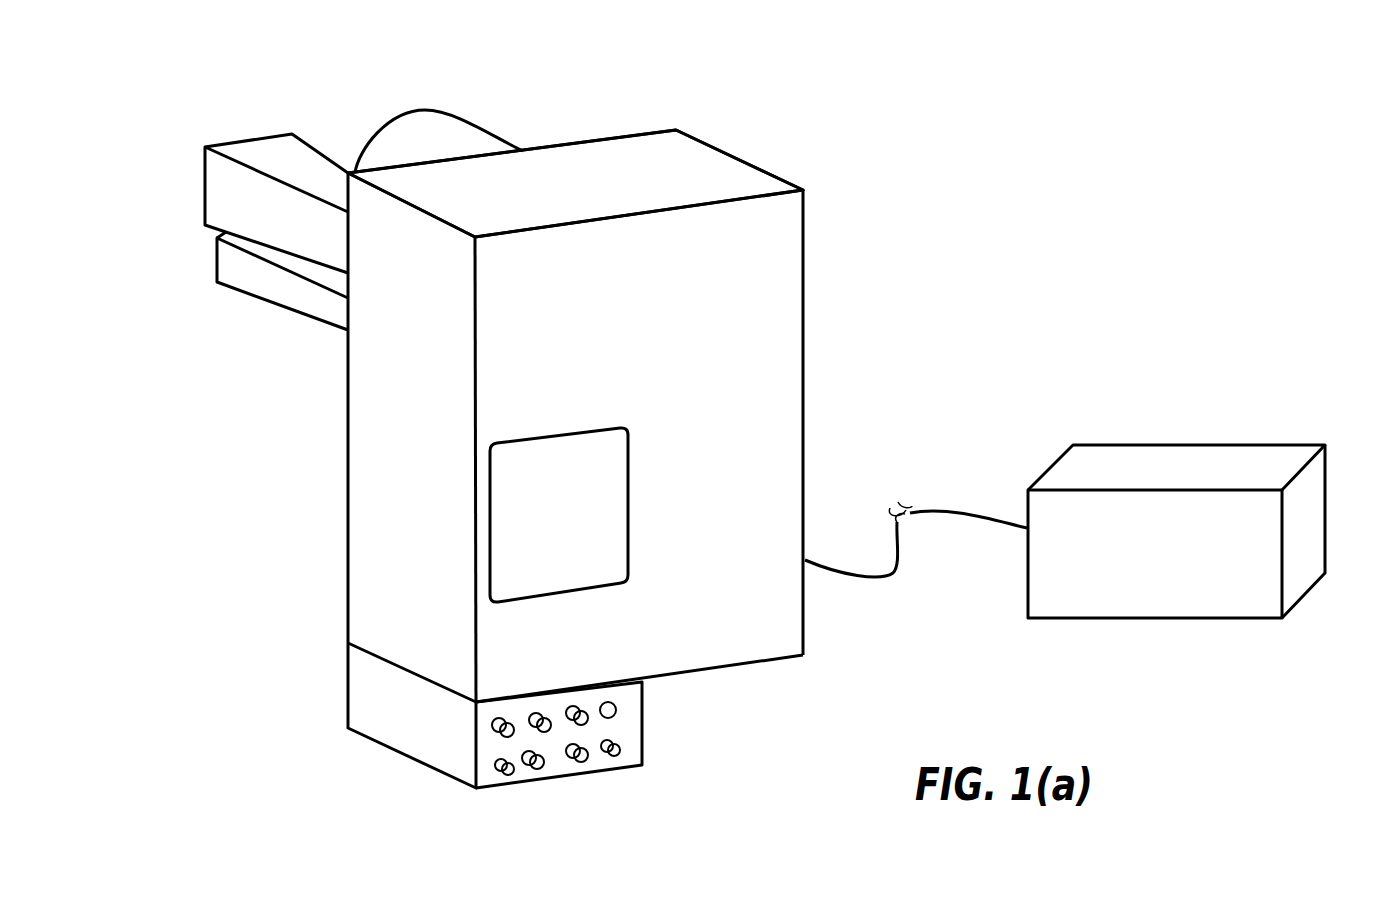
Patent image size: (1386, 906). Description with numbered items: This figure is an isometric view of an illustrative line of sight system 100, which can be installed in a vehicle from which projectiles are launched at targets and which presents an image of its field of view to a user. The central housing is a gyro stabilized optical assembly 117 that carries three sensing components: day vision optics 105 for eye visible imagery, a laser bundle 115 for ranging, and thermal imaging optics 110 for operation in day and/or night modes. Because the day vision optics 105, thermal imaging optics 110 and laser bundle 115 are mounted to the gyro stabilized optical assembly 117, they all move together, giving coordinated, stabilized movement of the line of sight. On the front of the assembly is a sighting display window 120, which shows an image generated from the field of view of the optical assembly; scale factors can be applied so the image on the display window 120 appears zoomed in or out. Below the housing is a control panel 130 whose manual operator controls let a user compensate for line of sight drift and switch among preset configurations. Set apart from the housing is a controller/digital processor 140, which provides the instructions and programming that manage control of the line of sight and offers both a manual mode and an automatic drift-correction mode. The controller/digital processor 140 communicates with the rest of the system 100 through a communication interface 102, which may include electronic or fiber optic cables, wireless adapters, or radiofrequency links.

The line of sight system 100 is at (888, 185).
The communication interface 102 is at (960, 515).
The day vision optics 105 is at (218, 190).
The thermal imaging optics 110 is at (415, 123).
The laser bundle 115 is at (232, 263).
The gyro stabilized optical assembly 117 is at (681, 160).
The sighting display window 120 is at (559, 515).
The control panel 130 is at (635, 720).
The controller/digital processor 140 is at (1176, 531).